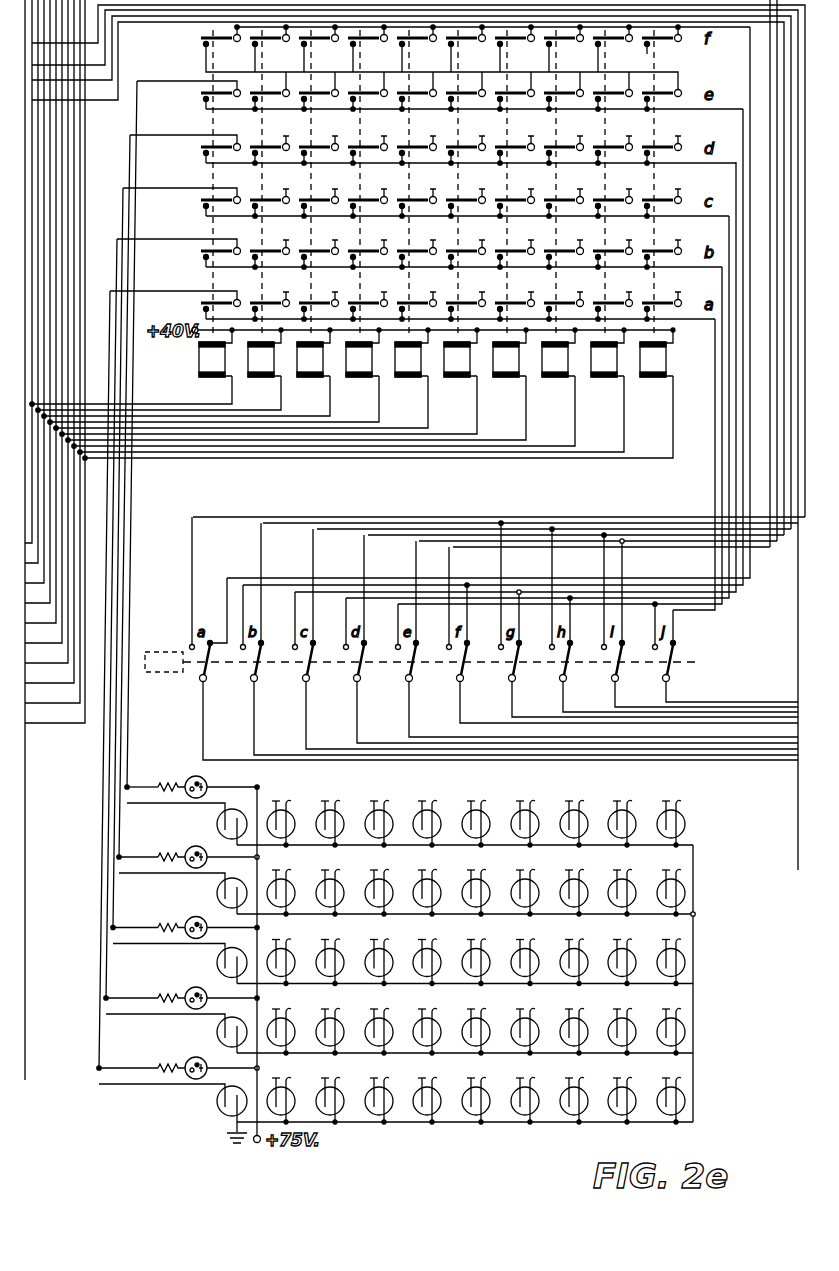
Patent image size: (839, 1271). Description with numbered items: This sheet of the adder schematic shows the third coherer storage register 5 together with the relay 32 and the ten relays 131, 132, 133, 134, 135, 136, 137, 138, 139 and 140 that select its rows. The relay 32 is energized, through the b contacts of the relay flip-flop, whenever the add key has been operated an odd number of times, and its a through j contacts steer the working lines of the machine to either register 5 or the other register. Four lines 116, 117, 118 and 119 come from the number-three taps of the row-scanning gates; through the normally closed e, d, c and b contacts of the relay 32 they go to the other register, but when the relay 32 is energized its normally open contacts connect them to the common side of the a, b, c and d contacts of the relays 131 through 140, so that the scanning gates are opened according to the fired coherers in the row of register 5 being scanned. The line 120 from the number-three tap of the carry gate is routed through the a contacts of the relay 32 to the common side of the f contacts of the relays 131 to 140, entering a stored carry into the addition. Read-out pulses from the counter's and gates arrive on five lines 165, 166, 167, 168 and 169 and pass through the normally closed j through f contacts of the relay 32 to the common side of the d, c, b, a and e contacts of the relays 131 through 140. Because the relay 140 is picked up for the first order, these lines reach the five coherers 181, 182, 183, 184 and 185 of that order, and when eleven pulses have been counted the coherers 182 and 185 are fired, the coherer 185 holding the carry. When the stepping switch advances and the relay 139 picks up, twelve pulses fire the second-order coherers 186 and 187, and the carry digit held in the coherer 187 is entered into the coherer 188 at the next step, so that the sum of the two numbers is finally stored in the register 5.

The storage register 5 is at (458, 984).
The relay 32 is at (170, 650).
The line 116 is at (403, 695).
The line 117 is at (351, 695).
The line 118 is at (300, 695).
The line 119 is at (248, 695).
The line 120 is at (197, 695).
The relay 131 is at (132, 367).
The relay 132 is at (159, 370).
The relay 133 is at (187, 373).
The relay 134 is at (214, 376).
The relay 135 is at (242, 379).
The relay 136 is at (269, 382).
The relay 137 is at (297, 385).
The relay 138 is at (324, 388).
The relay 139 is at (352, 391).
The relay 140 is at (379, 394).
The line 165 is at (506, 695).
The line 166 is at (557, 695).
The line 167 is at (609, 695).
The line 168 is at (660, 695).
The line 169 is at (454, 695).
The coherer 181 is at (685, 1092).
The coherer 182 is at (683, 1023).
The coherer 183 is at (682, 955).
The coherer 184 is at (682, 885).
The coherer 185 is at (684, 816).
The coherer 186 is at (633, 1023).
The coherer 187 is at (632, 816).
The coherer 188 is at (585, 885).